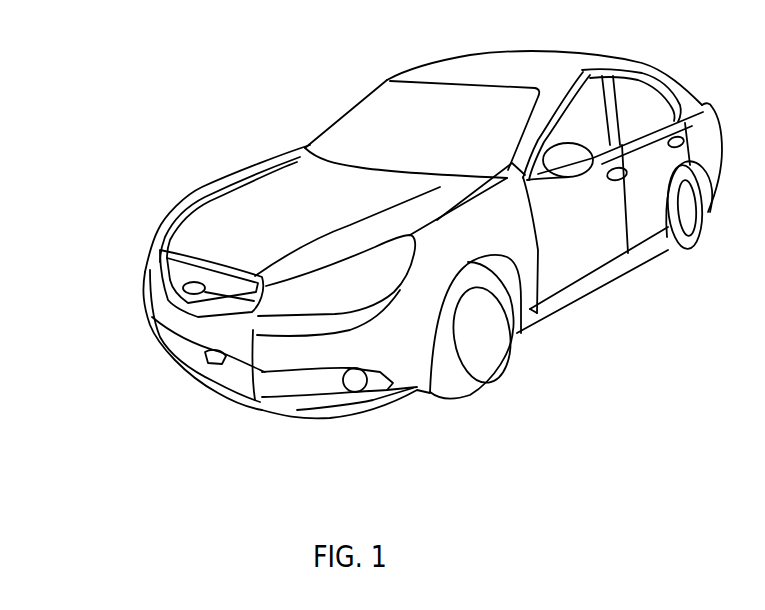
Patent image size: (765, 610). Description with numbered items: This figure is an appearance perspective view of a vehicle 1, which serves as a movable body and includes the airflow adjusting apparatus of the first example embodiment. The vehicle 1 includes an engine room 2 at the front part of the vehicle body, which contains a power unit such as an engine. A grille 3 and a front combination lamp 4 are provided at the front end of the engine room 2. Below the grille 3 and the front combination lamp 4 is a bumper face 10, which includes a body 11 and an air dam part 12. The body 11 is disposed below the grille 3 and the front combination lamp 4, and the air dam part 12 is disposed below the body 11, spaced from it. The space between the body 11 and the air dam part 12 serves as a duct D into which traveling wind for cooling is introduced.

The vehicle 1 is at (128, 90).
The engine room 2 is at (220, 203).
The grille 3 is at (165, 271).
The front combination lamp 4 is at (341, 289).
The bumper face 10 is at (152, 310).
The body 11 is at (185, 330).
The air dam part 12 is at (222, 383).
The duct D is at (188, 362).